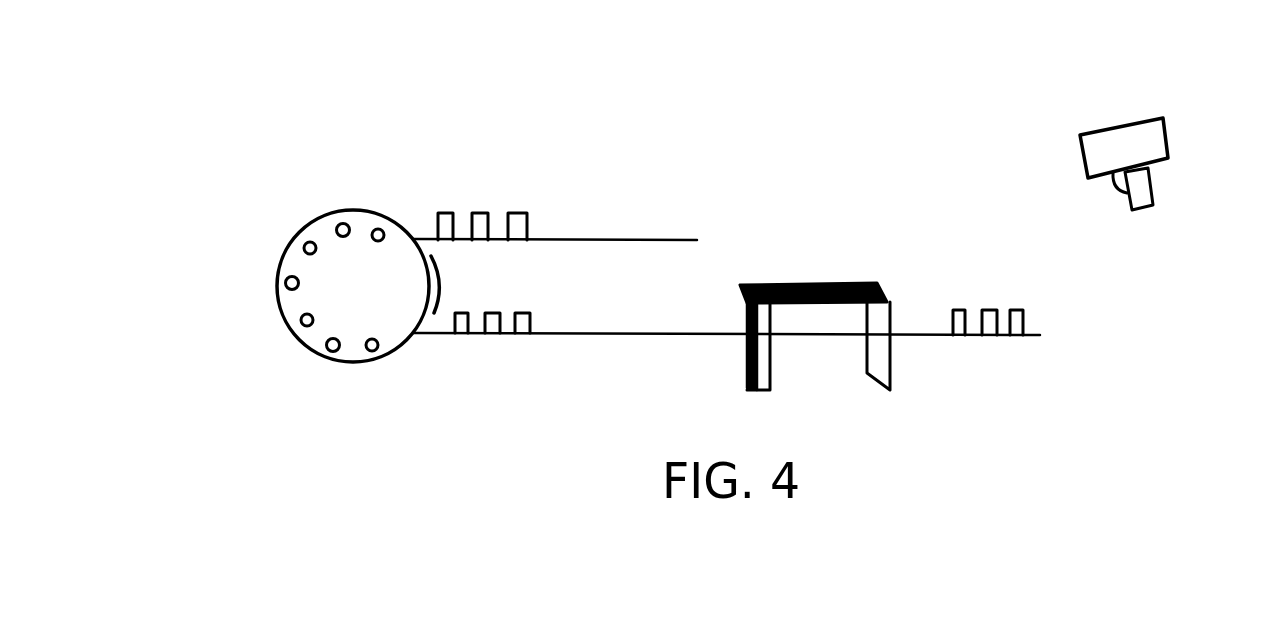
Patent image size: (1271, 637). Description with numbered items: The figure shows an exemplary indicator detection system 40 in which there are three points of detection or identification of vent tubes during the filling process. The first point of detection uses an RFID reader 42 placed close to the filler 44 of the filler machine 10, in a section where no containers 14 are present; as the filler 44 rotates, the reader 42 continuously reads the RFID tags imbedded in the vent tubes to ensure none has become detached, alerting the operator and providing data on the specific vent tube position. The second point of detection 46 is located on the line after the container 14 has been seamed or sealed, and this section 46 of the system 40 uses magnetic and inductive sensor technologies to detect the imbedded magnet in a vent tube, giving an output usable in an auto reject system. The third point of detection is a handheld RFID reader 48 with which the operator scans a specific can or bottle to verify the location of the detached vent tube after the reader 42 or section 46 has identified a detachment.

The filler machine 10 is at (658, 242).
The containers 14 is at (515, 215).
The system 40 is at (759, 216).
The RFID reader 42 is at (441, 284).
The filler 44 is at (322, 227).
The second point of detection 46 is at (840, 283).
The handheld RFID reader 48 is at (1137, 130).